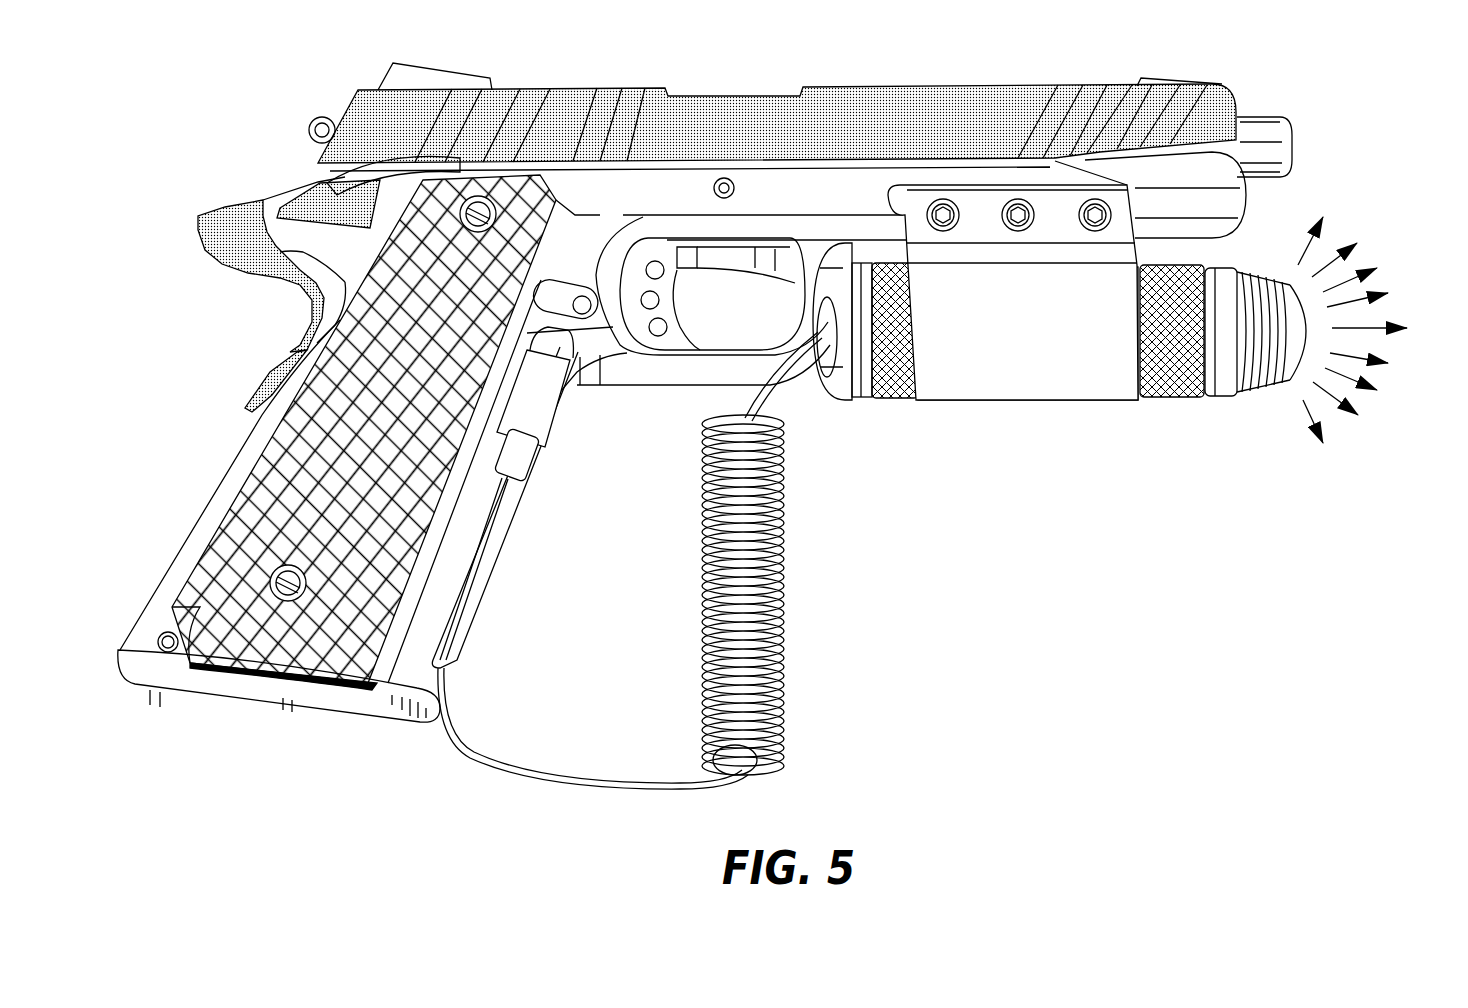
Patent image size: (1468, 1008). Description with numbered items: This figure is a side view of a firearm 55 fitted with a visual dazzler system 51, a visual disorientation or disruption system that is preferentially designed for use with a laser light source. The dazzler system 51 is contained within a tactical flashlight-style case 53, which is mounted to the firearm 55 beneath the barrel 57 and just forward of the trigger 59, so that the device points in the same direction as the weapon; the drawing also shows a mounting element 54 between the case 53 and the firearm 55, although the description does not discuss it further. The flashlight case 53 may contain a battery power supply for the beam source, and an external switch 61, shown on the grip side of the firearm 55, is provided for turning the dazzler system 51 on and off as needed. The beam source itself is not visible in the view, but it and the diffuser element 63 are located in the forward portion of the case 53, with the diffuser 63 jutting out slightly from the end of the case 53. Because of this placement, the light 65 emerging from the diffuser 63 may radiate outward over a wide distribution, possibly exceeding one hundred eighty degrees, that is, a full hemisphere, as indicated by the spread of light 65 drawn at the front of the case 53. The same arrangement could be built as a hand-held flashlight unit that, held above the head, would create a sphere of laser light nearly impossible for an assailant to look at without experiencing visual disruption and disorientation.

The visual dazzler system 51 is at (1158, 450).
The tactical flashlight-style case 53 is at (873, 398).
The rail mount 54 is at (1020, 405).
The firearm 55 is at (838, 88).
The barrel 57 is at (1250, 117).
The trigger 59 is at (677, 283).
The external switch 61 is at (540, 417).
The diffuser element 63 is at (1316, 325).
The light 65 is at (1302, 392).